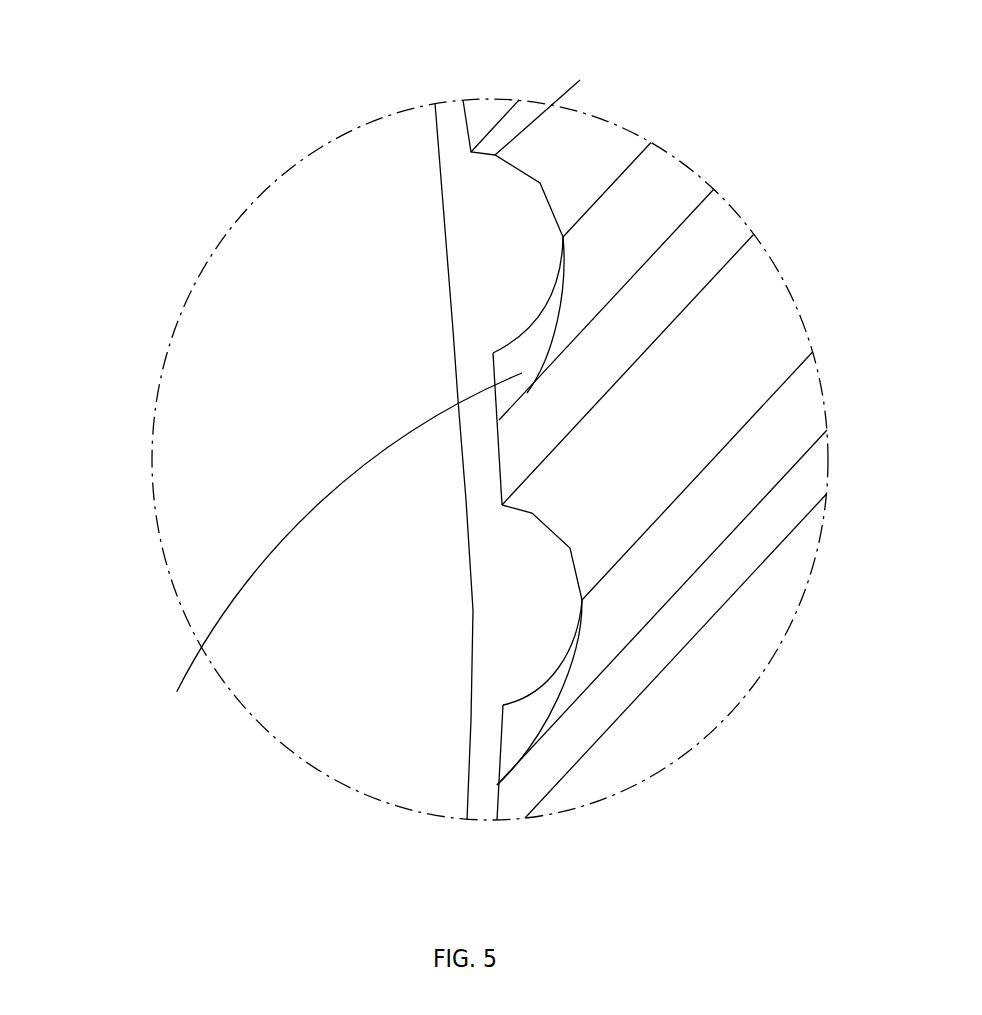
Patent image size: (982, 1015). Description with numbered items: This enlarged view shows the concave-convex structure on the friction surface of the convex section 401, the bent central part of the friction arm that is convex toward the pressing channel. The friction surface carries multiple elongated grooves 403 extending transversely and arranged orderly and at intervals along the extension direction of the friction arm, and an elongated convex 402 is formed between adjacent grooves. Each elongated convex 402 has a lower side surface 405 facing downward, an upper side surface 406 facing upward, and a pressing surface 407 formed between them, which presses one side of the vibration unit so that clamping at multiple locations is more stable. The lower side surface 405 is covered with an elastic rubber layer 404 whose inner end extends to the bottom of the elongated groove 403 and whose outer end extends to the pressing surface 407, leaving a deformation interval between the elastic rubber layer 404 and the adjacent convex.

The convex section 401 is at (233, 485).
The elongated convex 402 is at (503, 237).
The elongated groove 403 is at (673, 267).
The elastic rubber layer 404 is at (326, 559).
The lower side surface 405 is at (530, 327).
The upper side surface 406 is at (580, 80).
The pressing surface 407 is at (563, 237).